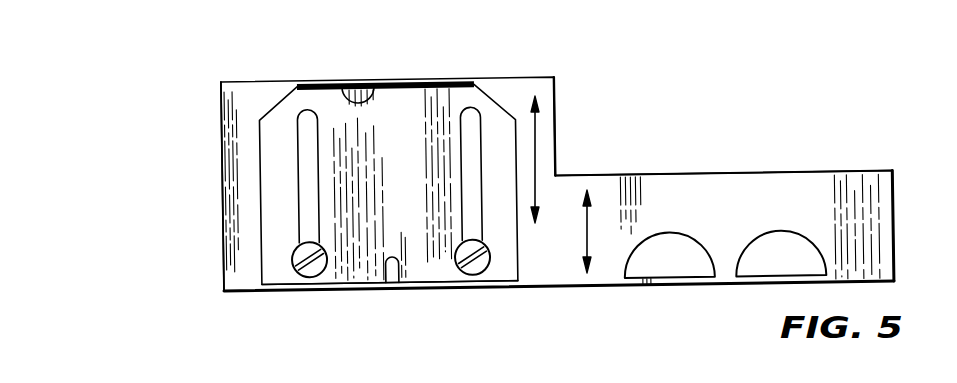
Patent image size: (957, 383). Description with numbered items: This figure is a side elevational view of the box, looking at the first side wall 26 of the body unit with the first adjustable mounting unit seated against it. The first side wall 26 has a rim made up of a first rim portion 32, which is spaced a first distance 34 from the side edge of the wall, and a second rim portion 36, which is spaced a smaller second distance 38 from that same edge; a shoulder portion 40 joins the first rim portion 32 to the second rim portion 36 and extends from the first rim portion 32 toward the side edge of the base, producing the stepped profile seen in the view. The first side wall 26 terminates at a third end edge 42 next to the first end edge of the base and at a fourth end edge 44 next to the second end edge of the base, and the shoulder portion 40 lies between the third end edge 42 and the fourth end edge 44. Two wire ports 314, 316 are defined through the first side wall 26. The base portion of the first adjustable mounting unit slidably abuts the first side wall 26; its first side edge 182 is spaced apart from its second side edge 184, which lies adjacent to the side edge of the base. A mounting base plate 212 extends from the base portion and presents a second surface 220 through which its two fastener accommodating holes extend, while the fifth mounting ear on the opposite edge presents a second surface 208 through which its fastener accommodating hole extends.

The first side wall 26 is at (815, 176).
The first rim portion 32 is at (373, 76).
The first distance 34 is at (537, 170).
The second rim portion 36 is at (683, 179).
The second distance 38 is at (583, 240).
The shoulder portion 40 is at (557, 120).
The third end edge 42 is at (222, 197).
The fourth end edge 44 is at (895, 186).
The first side edge 182 is at (548, 135).
The second side edge 184 is at (262, 170).
The second surface 208 is at (346, 98).
The mounting base plate 212 is at (347, 285).
The second surface 220 is at (457, 290).
The wire port 314 is at (660, 265).
The wire port 316 is at (767, 262).